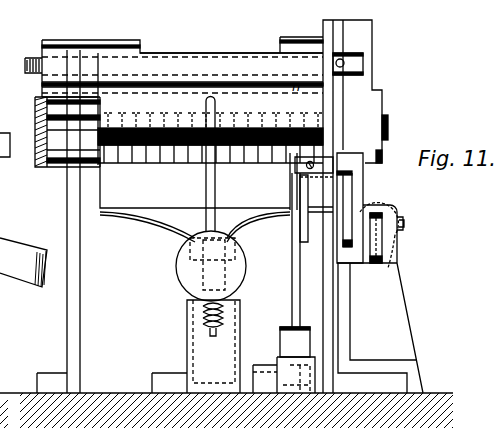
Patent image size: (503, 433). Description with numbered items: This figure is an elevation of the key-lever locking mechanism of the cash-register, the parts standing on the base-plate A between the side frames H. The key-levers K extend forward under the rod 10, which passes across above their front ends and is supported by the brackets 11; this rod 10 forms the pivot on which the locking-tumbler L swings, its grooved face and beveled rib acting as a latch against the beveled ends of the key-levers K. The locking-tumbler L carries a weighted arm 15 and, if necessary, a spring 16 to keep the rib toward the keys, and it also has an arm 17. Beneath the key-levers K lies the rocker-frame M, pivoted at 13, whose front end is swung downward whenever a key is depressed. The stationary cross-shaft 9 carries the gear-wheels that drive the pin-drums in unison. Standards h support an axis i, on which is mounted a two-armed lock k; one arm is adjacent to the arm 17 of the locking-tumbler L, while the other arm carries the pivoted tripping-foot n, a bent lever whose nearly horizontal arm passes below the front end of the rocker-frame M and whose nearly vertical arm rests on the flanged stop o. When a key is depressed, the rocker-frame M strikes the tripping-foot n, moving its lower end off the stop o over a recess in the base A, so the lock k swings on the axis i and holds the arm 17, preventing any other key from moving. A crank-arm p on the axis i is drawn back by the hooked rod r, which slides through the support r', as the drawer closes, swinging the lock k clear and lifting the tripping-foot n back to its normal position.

The base-plate A is at (243, 410).
The stationary cross-shaft 9 is at (396, 125).
The rod 10 is at (218, 58).
The brackets 11 is at (80, 312).
The pivot 13 is at (185, 251).
The weighted arm 15 is at (185, 277).
The spring 16 is at (197, 313).
The arm 17 is at (276, 152).
The side frames H is at (372, 80).
The key-levers K is at (155, 155).
The locking-tumbler L is at (182, 102).
The rocker-frame M is at (195, 202).
The standards h is at (333, 320).
The axis i is at (291, 170).
The lock k is at (314, 230).
The tripping-foot n is at (290, 318).
The flanged stop o is at (285, 364).
The crank-arm p is at (380, 195).
The hooked rod r is at (376, 256).
The support r' is at (403, 235).